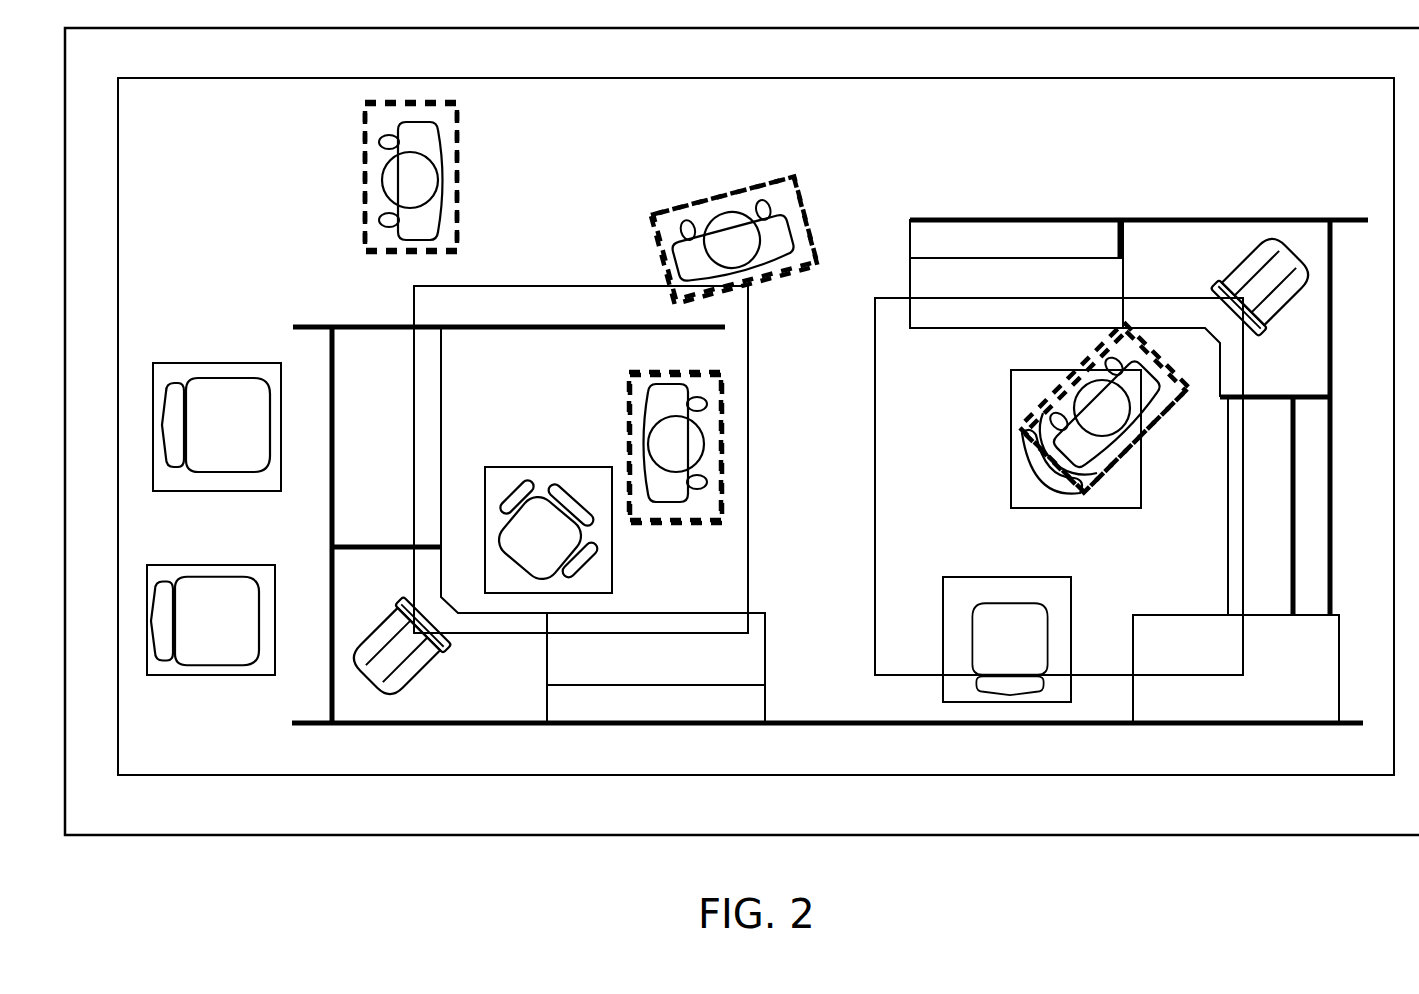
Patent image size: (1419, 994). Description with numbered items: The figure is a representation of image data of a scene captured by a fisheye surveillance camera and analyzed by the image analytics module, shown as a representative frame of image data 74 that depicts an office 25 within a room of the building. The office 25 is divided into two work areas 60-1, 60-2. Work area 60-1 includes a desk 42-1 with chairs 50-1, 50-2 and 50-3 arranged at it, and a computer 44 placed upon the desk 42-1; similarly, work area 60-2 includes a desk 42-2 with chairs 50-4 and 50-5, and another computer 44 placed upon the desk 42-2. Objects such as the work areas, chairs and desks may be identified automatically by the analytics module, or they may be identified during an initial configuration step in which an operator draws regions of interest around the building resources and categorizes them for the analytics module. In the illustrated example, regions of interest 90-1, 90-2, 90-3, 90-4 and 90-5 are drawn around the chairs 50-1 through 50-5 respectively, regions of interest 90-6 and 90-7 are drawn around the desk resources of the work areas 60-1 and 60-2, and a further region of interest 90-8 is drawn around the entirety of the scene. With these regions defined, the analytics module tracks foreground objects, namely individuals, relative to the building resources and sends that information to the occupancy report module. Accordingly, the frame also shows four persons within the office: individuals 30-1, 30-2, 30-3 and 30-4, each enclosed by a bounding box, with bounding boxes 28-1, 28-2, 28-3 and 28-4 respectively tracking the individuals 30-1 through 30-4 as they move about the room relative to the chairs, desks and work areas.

The office 25 is at (756, 426).
The frame of image data 74 is at (1233, 835).
The work area 60-1 is at (331, 293).
The work area 60-2 is at (1015, 176).
The bounding box 28-1 is at (362, 176).
The bounding box 28-2 is at (737, 449).
The bounding box 28-3 is at (715, 221).
The bounding box 28-4 is at (1104, 450).
The individual 30-1 is at (432, 150).
The individual 30-2 is at (673, 403).
The individual 30-3 is at (768, 235).
The individual 30-4 is at (1108, 398).
The chair 50-1 is at (235, 390).
The chair 50-2 is at (243, 648).
The chair 50-3 is at (525, 476).
The chair 50-4 is at (1023, 455).
The chair 50-5 is at (1002, 617).
The region of interest 90-1 is at (204, 363).
The region of interest 90-2 is at (210, 565).
The region of interest 90-3 is at (593, 470).
The region of interest 90-4 is at (1012, 485).
The region of interest 90-5 is at (942, 690).
The region of interest 90-6 is at (522, 284).
The region of interest 90-7 is at (1175, 297).
The region of interest 90-8 is at (527, 775).
The desk 42-1 is at (740, 660).
The desk 42-2 is at (1283, 693).
The computer 44 is at (380, 695).